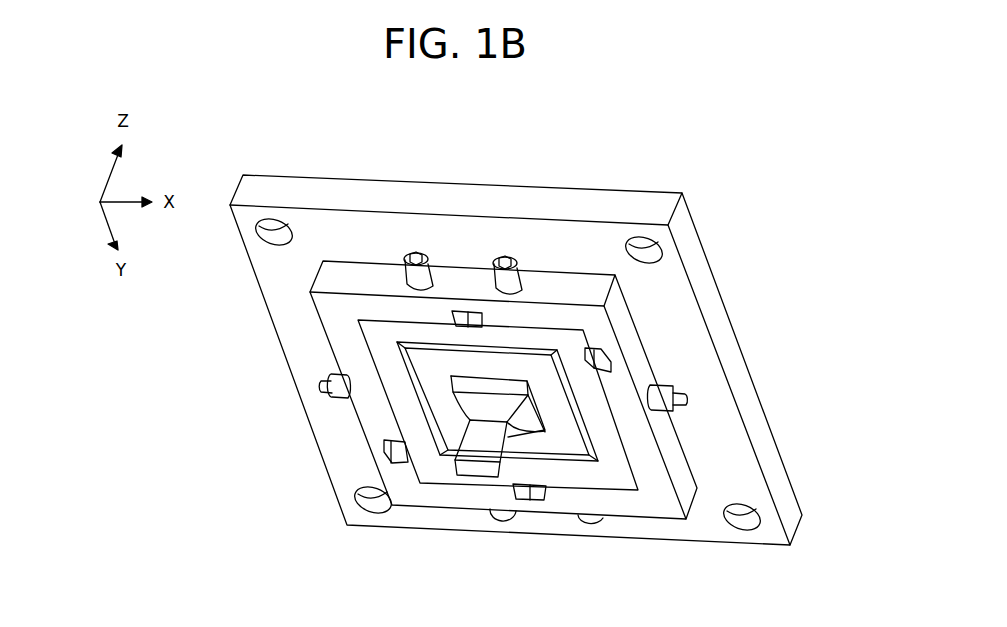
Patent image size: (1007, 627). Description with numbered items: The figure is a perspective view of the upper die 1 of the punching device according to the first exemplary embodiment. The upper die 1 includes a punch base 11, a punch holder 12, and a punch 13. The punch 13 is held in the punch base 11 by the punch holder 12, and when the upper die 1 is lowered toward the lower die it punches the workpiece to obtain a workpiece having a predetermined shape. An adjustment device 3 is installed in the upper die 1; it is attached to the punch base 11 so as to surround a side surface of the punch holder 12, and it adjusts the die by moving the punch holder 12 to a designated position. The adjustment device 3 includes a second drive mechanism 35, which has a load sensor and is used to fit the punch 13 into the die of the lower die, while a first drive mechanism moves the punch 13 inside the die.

The upper die 1 is at (587, 172).
The punch base 11 is at (686, 232).
The punch holder 12 is at (565, 440).
The punch 13 is at (472, 466).
The adjustment device 3 is at (637, 348).
The second drive mechanism 35 is at (506, 264).